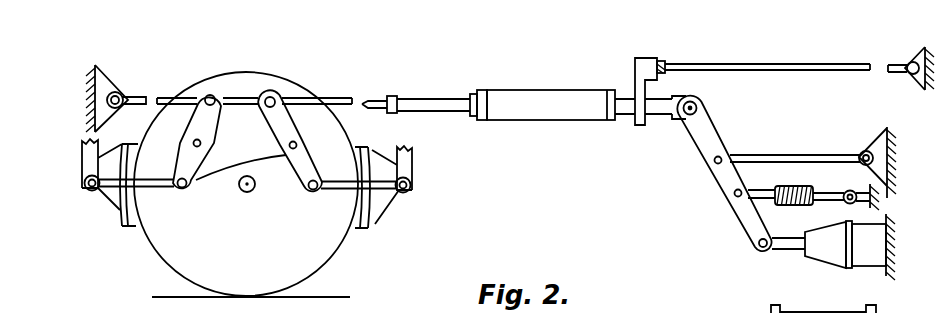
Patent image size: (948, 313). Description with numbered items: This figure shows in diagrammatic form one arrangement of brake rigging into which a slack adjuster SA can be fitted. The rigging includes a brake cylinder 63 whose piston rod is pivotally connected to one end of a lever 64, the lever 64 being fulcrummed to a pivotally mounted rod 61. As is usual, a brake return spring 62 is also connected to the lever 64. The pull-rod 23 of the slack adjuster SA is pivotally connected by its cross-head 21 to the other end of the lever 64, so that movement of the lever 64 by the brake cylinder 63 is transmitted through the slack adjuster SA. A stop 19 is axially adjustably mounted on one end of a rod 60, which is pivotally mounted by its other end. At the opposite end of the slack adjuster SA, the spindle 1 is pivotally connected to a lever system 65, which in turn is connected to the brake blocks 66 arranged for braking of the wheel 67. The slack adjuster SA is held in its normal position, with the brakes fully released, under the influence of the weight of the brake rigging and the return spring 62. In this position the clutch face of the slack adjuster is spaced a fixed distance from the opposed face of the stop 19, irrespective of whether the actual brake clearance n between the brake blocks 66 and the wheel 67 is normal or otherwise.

The spindle 1 is at (345, 101).
The stop 19 is at (648, 62).
The cross-head 21 is at (676, 112).
The pull-rod 23 is at (628, 112).
The slack adjuster SA is at (527, 125).
The rod 60 is at (806, 64).
The pivotally mounted rod 61 is at (782, 157).
The brake return spring 62 is at (797, 186).
The brake cylinder 63 is at (870, 252).
The lever 64 is at (722, 182).
The lever system 65 is at (204, 181).
The brake blocks 66 is at (108, 203).
The wheel 67 is at (183, 258).
The brake clearance n is at (349, 243).